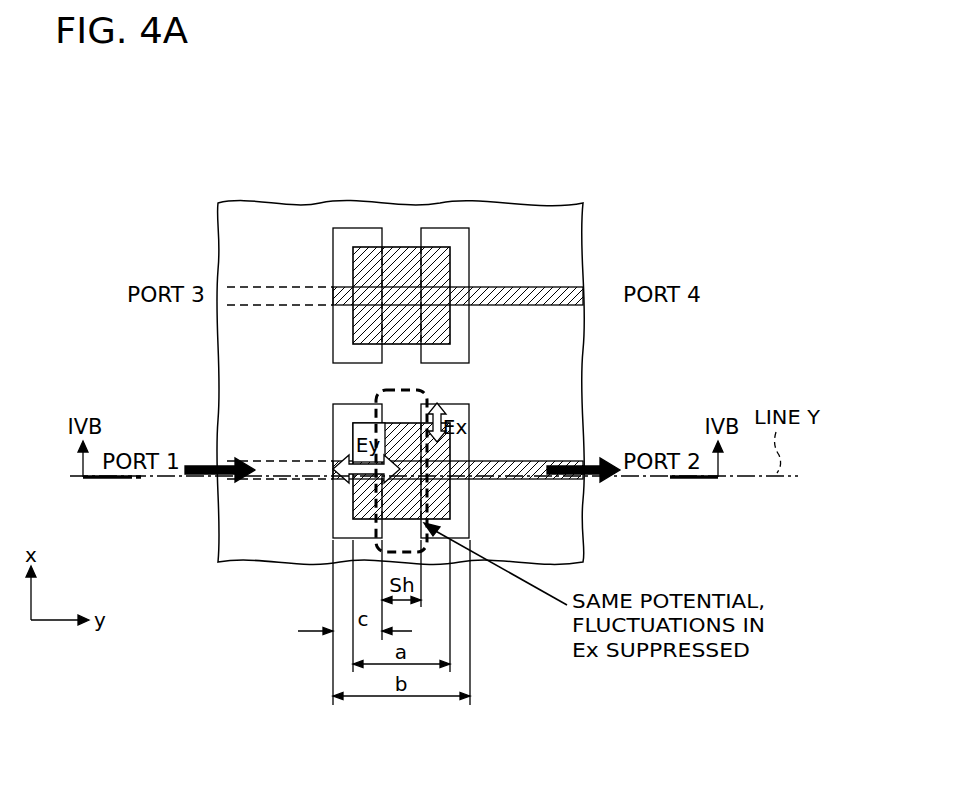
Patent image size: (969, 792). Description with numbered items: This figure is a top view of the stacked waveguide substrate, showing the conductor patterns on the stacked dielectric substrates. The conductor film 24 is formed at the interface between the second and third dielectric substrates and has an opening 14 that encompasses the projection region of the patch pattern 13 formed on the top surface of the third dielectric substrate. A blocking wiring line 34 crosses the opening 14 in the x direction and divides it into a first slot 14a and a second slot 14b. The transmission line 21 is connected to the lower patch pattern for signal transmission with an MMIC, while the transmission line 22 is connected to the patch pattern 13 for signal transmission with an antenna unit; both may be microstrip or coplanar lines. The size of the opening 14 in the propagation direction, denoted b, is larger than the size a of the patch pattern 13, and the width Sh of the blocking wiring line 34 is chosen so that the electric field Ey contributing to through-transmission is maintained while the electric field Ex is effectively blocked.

The patch pattern 13 is at (363, 272).
The opening 14 is at (401, 306).
The first slot 14a is at (372, 235).
The second slot 14b is at (430, 235).
The transmission line 21 is at (260, 280).
The transmission line 22 is at (543, 287).
The conductor film 24 is at (535, 217).
The blocking wiring line 34 is at (400, 350).